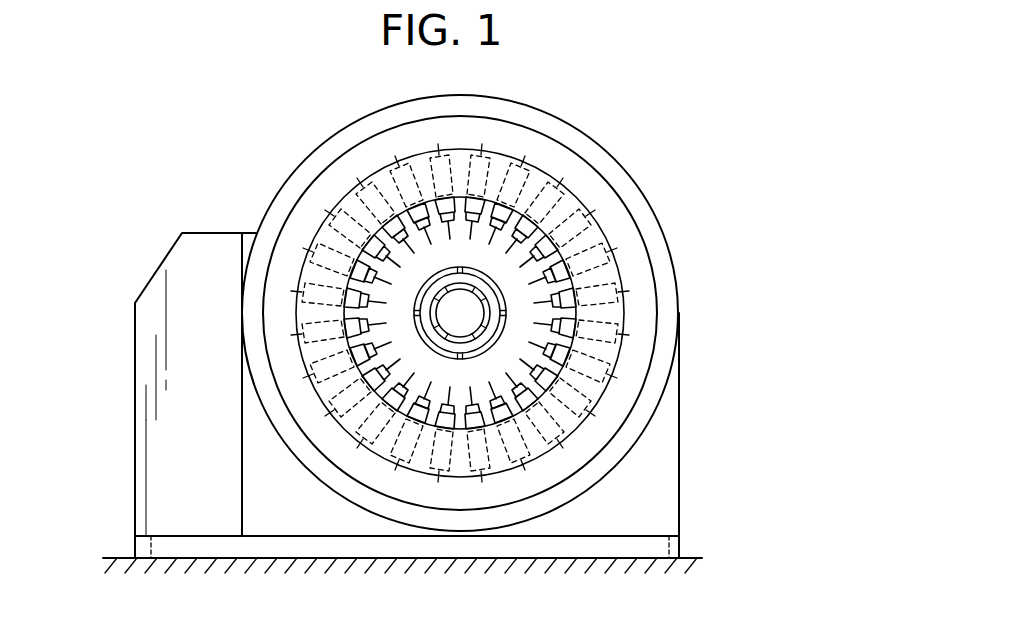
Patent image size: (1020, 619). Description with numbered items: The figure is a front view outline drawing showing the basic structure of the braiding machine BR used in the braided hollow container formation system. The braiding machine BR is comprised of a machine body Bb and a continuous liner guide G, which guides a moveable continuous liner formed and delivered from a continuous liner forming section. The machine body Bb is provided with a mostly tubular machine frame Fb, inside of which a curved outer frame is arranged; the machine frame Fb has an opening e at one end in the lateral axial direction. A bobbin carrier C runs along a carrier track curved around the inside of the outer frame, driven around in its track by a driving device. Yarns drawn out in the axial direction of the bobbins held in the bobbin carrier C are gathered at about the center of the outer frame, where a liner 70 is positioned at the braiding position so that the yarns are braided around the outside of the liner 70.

The machine frame Fb is at (710, 167).
The braiding machine BR is at (520, 313).
The machine body Bb is at (682, 246).
The opening e is at (580, 312).
The liner 70 is at (483, 340).
The continuous liner guide G is at (404, 282).
The bobbin carrier C is at (362, 424).